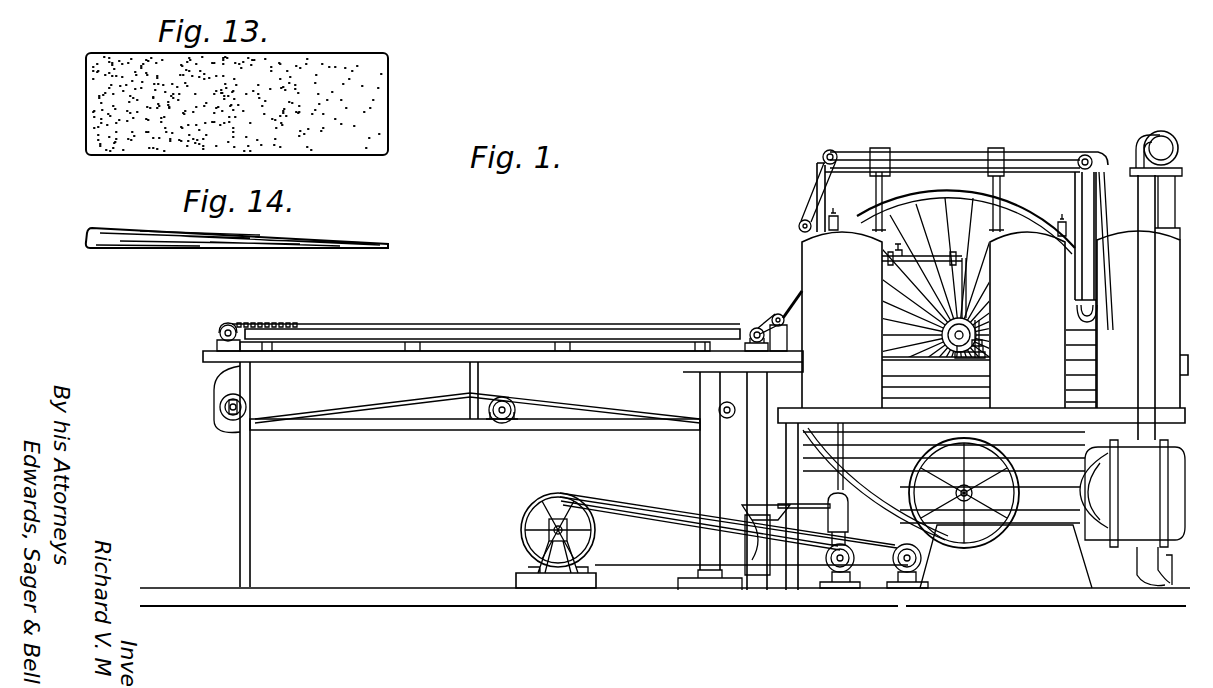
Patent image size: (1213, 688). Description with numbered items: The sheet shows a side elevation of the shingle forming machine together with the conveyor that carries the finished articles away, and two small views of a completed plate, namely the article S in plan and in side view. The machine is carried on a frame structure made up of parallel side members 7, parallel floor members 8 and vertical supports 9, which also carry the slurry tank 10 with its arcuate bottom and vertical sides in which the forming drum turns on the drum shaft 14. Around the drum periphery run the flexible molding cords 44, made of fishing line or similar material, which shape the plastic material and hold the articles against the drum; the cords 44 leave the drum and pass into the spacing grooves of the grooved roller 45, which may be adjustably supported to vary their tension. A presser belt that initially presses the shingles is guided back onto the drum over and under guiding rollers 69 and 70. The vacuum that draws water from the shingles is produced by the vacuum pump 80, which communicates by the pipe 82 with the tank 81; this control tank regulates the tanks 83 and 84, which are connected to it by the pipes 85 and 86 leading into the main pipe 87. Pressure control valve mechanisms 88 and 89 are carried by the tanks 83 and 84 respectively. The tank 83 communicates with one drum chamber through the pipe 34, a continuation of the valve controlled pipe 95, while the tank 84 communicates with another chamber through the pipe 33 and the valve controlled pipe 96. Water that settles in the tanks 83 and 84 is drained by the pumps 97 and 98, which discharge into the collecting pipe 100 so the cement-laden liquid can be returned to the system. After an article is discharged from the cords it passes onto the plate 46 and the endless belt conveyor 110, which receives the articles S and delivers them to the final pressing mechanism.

In FIG. 13, the articles S is at (97, 115).
In FIG. 14, the articles S is at (93, 237).
In FIG. 1, the endless belt conveyor 110 is at (284, 326).
In FIG. 1, the vertical supports 9 is at (708, 470).
In FIG. 1, the floor members 8 is at (705, 580).
In FIG. 1, the collecting pipe 100 is at (770, 560).
In FIG. 1, the pump 97 is at (848, 520).
In FIG. 1, the pump 98 is at (922, 548).
In FIG. 1, the slurry tank 10 is at (836, 452).
In FIG. 1, the side members 7 is at (936, 377).
In FIG. 1, the drum shaft 14 is at (977, 332).
In FIG. 1, the pipe 34 is at (994, 292).
In FIG. 1, the valve controlled pipe 95 is at (888, 282).
In FIG. 1, the valve controlled pipe 96 is at (985, 342).
In FIG. 1, the pipe 33 is at (980, 358).
In FIG. 1, the flexible molding cords 44 is at (801, 290).
In FIG. 1, the grooved roller 45 is at (778, 314).
In FIG. 1, the plate 46 is at (758, 326).
In FIG. 1, the tank 83 is at (812, 256).
In FIG. 1, the tank 84 is at (1027, 320).
In FIG. 1, the pipe 82 is at (1145, 268).
In FIG. 1, the tank 81 is at (1145, 304).
In FIG. 1, the pipe 85 is at (883, 190).
In FIG. 1, the pipe 86 is at (1001, 192).
In FIG. 1, the main pipe 87 is at (958, 158).
In FIG. 1, the pressure control valve mechanism 88 is at (838, 216).
In FIG. 1, the pressure control valve mechanism 89 is at (1062, 220).
In FIG. 1, the guiding roller 69 is at (830, 149).
In FIG. 1, the guiding roller 70 is at (1100, 152).
In FIG. 1, the vacuum pump 80 is at (1047, 513).